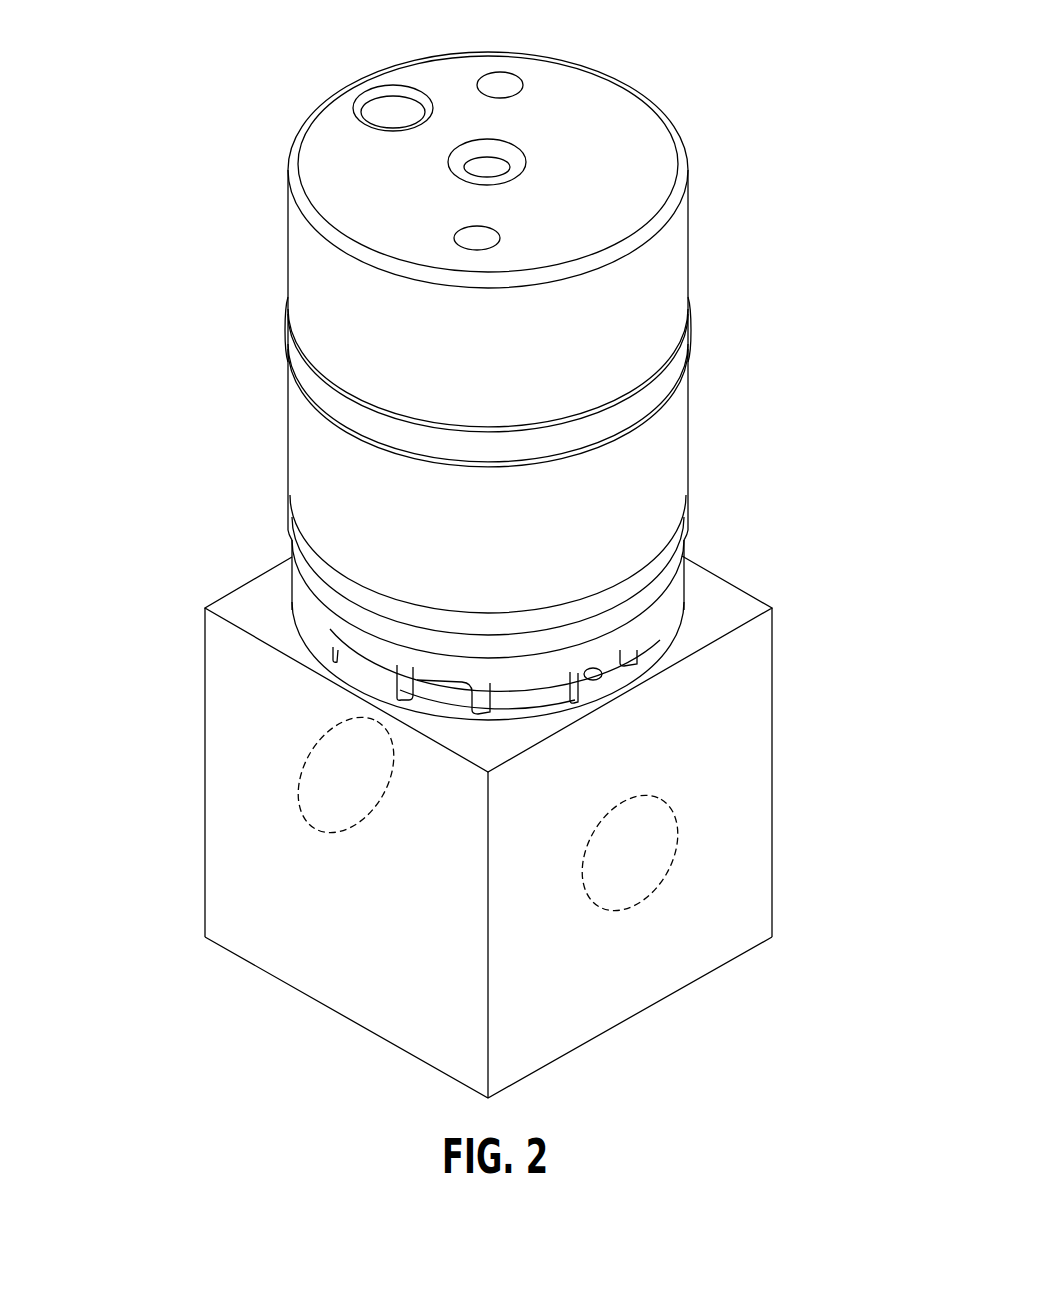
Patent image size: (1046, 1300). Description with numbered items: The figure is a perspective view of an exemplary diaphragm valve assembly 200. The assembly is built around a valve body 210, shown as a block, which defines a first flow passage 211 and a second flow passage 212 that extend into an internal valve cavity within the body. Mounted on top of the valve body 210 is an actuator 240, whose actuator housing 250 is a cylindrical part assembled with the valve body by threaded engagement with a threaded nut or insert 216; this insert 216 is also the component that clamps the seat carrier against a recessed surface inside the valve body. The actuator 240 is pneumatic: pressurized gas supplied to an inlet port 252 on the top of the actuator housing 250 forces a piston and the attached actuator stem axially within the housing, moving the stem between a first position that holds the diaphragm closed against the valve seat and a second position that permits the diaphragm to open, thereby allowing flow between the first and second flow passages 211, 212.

The diaphragm valve assembly 200 is at (462, 551).
The valve body 210 is at (477, 827).
The first flow passage 211 is at (343, 745).
The second flow passage 212 is at (652, 843).
The threaded nut or insert 216 is at (537, 687).
The actuator 240 is at (554, 362).
The actuator housing 250 is at (657, 465).
The inlet port 252 is at (483, 158).